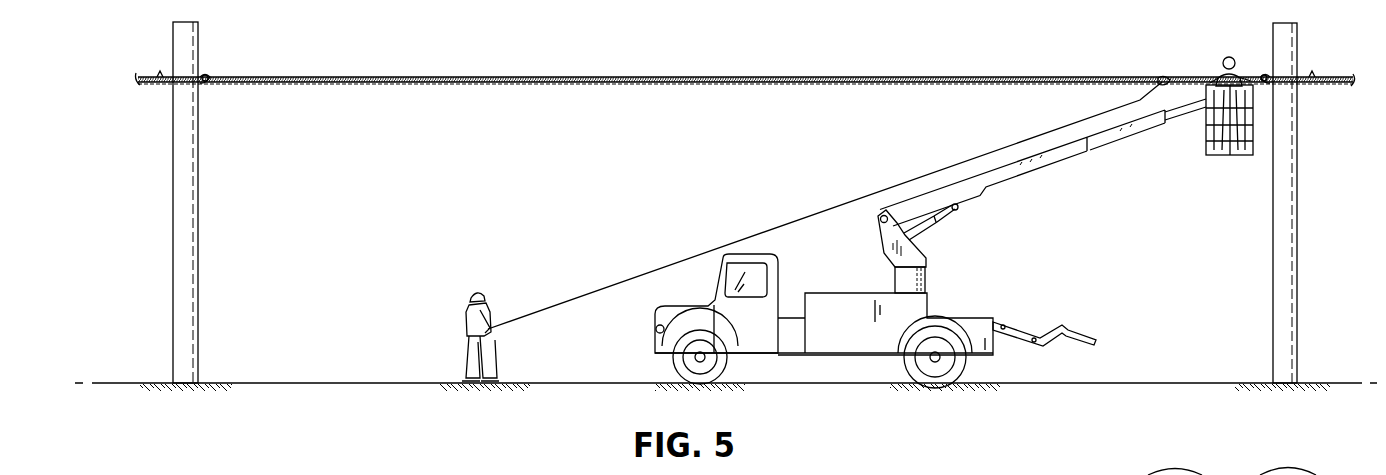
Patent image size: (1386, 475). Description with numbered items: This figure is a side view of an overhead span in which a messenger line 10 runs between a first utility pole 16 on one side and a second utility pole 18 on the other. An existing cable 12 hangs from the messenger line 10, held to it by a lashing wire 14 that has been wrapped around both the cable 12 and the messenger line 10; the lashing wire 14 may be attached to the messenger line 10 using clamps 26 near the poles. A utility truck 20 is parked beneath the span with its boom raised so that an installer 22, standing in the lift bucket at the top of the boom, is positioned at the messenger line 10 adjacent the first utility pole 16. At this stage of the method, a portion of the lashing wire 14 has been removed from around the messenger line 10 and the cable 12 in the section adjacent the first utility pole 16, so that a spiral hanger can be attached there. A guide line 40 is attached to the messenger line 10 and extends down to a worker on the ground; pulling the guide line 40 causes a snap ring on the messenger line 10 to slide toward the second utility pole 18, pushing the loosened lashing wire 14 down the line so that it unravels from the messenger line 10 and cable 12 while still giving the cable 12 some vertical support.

The messenger line 10 is at (745, 81).
The cable 12 is at (849, 83).
The lashing wire 14 is at (900, 83).
The first utility pole 16 is at (1298, 227).
The second utility pole 18 is at (173, 184).
The utility truck 20 is at (834, 298).
The installer 22 is at (1222, 64).
The clamps 26 is at (205, 73).
The guide line 40 is at (770, 231).